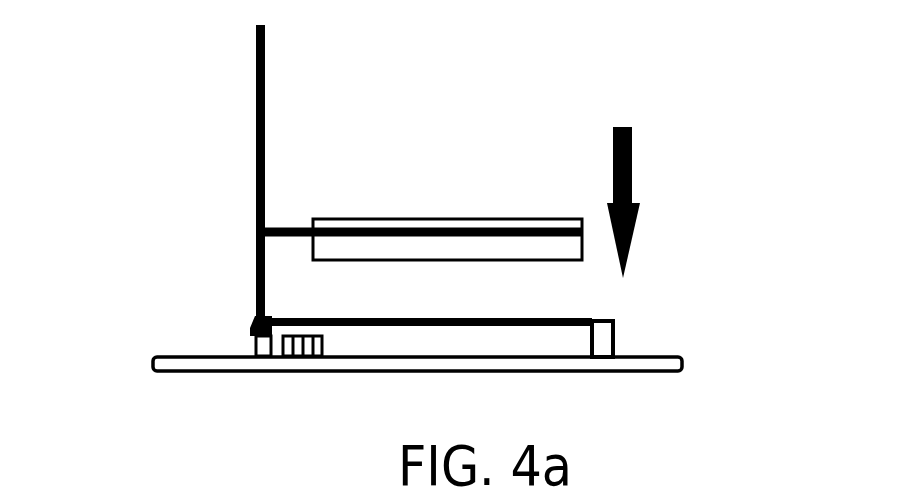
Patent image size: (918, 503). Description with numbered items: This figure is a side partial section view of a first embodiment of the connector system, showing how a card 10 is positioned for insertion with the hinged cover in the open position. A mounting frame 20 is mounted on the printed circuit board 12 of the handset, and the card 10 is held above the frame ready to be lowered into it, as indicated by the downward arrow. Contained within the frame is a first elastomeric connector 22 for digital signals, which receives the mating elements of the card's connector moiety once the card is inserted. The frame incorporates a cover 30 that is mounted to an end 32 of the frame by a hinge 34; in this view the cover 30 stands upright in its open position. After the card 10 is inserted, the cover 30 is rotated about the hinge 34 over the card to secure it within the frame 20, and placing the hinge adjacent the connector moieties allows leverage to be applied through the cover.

The card 10 is at (470, 186).
The printed circuit board 12 is at (670, 356).
The mounting frame 20 is at (615, 335).
The first elastomeric connector 22 is at (323, 348).
The cover 30 is at (266, 110).
The end of the frame 32 is at (252, 343).
The hinge 34 is at (257, 325).